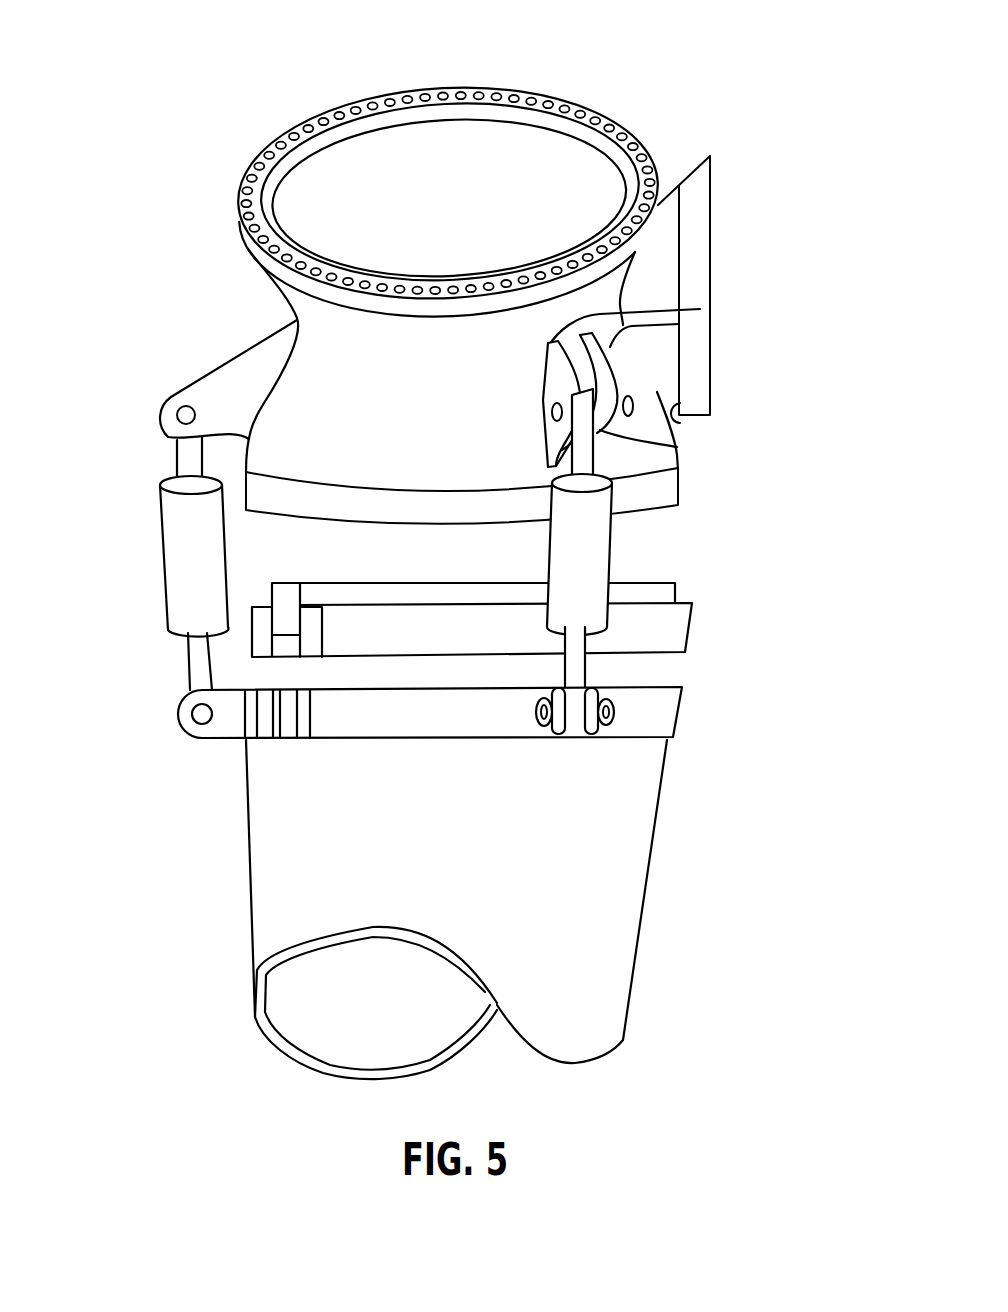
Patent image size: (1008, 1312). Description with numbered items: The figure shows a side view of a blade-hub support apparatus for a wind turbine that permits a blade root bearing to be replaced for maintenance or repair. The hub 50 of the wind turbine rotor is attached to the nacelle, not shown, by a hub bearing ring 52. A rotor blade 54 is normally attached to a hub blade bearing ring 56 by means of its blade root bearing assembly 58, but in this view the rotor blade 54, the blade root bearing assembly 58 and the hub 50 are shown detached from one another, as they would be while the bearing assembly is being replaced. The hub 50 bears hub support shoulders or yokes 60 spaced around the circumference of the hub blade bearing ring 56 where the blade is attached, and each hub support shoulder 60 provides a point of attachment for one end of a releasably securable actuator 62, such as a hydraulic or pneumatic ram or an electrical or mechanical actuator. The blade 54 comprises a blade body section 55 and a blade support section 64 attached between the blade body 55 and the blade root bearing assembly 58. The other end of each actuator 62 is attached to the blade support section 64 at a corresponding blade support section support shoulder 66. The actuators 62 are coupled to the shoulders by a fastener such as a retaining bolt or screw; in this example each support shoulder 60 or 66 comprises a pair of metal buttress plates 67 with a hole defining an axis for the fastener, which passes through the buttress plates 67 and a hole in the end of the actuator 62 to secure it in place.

The hub 50 is at (657, 378).
The hub bearing ring 52 is at (692, 197).
The rotor blade 54 is at (551, 909).
The blade body section 55 is at (623, 858).
The hub blade bearing ring 56 is at (600, 124).
The blade root bearing assembly 58 is at (662, 620).
The hub support shoulder 60 is at (222, 387).
The actuator 62 is at (183, 565).
The blade support section 64 is at (660, 703).
The blade support section support shoulder 66 is at (178, 727).
The buttress plate 67 is at (690, 312).